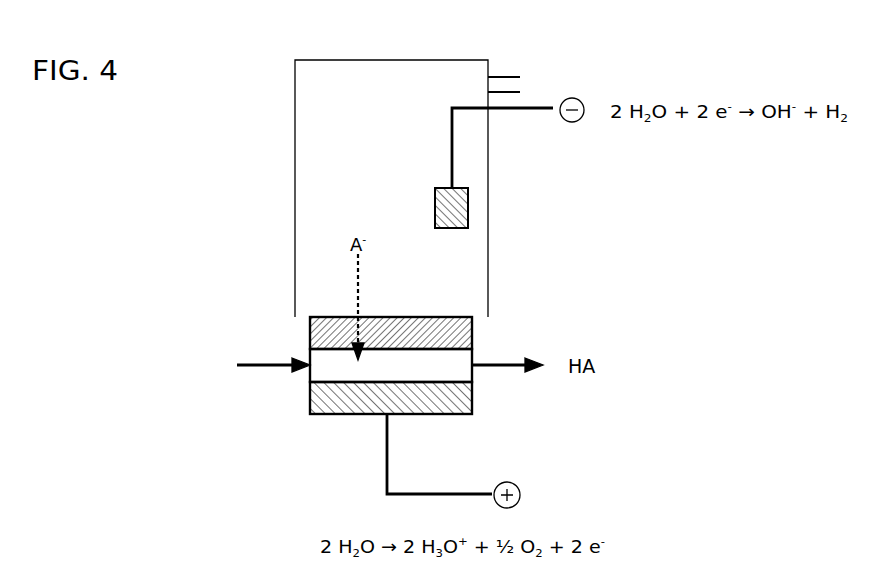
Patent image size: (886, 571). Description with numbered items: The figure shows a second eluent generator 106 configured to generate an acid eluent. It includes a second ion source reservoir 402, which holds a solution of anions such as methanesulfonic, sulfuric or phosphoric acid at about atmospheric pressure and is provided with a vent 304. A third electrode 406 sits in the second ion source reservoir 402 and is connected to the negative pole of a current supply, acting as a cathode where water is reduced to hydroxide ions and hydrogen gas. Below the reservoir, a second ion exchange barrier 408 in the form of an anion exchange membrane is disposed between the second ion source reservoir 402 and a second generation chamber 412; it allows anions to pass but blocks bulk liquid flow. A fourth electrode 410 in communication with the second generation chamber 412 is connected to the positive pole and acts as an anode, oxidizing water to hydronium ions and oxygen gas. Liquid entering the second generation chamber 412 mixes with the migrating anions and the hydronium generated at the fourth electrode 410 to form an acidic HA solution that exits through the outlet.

The second eluent generator 106 is at (672, 54).
The vent 304 is at (500, 74).
The second ion source reservoir 402 is at (295, 192).
The third electrode 406 is at (468, 203).
The second ion exchange barrier 408 is at (472, 335).
The fourth electrode 410 is at (472, 405).
The second generation chamber 412 is at (322, 373).